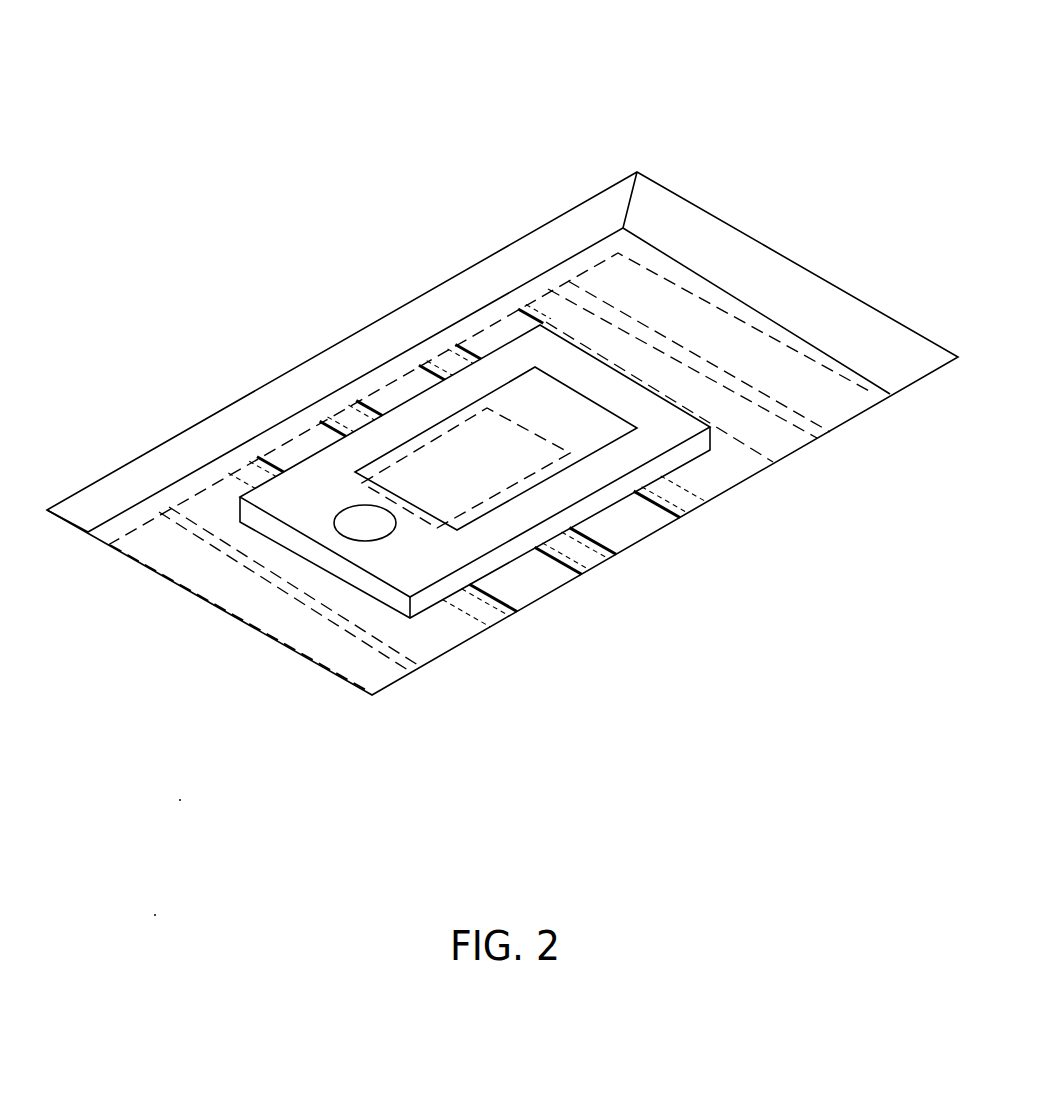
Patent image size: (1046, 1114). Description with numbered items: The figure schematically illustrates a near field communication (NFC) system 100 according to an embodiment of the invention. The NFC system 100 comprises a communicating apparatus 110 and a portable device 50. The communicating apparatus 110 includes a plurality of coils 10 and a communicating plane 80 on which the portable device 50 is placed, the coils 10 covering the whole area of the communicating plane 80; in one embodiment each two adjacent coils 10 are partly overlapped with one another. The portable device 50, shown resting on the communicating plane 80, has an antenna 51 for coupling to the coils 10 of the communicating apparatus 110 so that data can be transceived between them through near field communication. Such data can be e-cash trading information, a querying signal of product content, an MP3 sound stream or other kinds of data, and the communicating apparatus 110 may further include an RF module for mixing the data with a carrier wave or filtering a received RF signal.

The NFC system 100 is at (853, 145).
The coils 10 is at (591, 284).
The communicating apparatus 110 is at (415, 292).
The communicating plane 80 is at (860, 376).
The portable device 50 is at (254, 484).
The antenna 51 is at (460, 478).